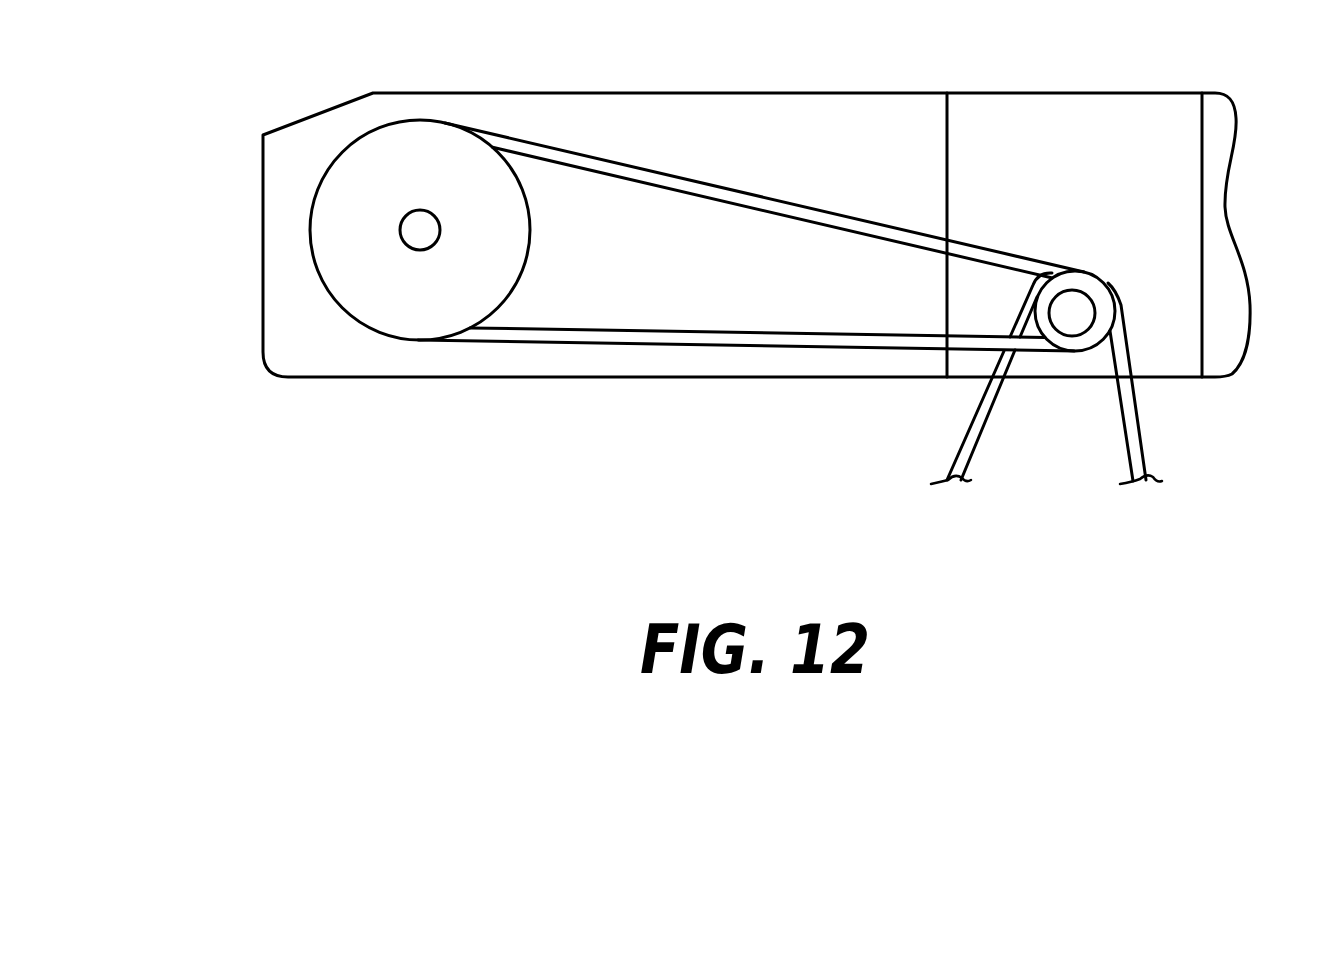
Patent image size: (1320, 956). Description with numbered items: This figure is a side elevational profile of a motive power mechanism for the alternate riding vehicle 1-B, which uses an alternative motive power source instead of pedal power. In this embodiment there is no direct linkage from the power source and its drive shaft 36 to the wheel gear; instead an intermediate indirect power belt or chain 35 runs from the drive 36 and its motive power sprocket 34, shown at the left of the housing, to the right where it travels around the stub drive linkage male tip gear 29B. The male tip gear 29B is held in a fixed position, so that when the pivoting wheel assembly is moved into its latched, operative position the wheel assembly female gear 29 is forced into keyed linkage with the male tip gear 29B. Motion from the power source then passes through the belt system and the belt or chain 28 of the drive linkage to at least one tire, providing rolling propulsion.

The alternate riding vehicle 1-B is at (238, 217).
The motive power sprocket 34 is at (348, 278).
The motor/battery/power cell and shaft 36 is at (420, 233).
The indirect power belt or chain 35 is at (652, 166).
The drive linkage male tip gear 29B is at (1078, 283).
The wheel assembly female gear 29 is at (1067, 320).
The belt or chain 28 is at (1146, 440).